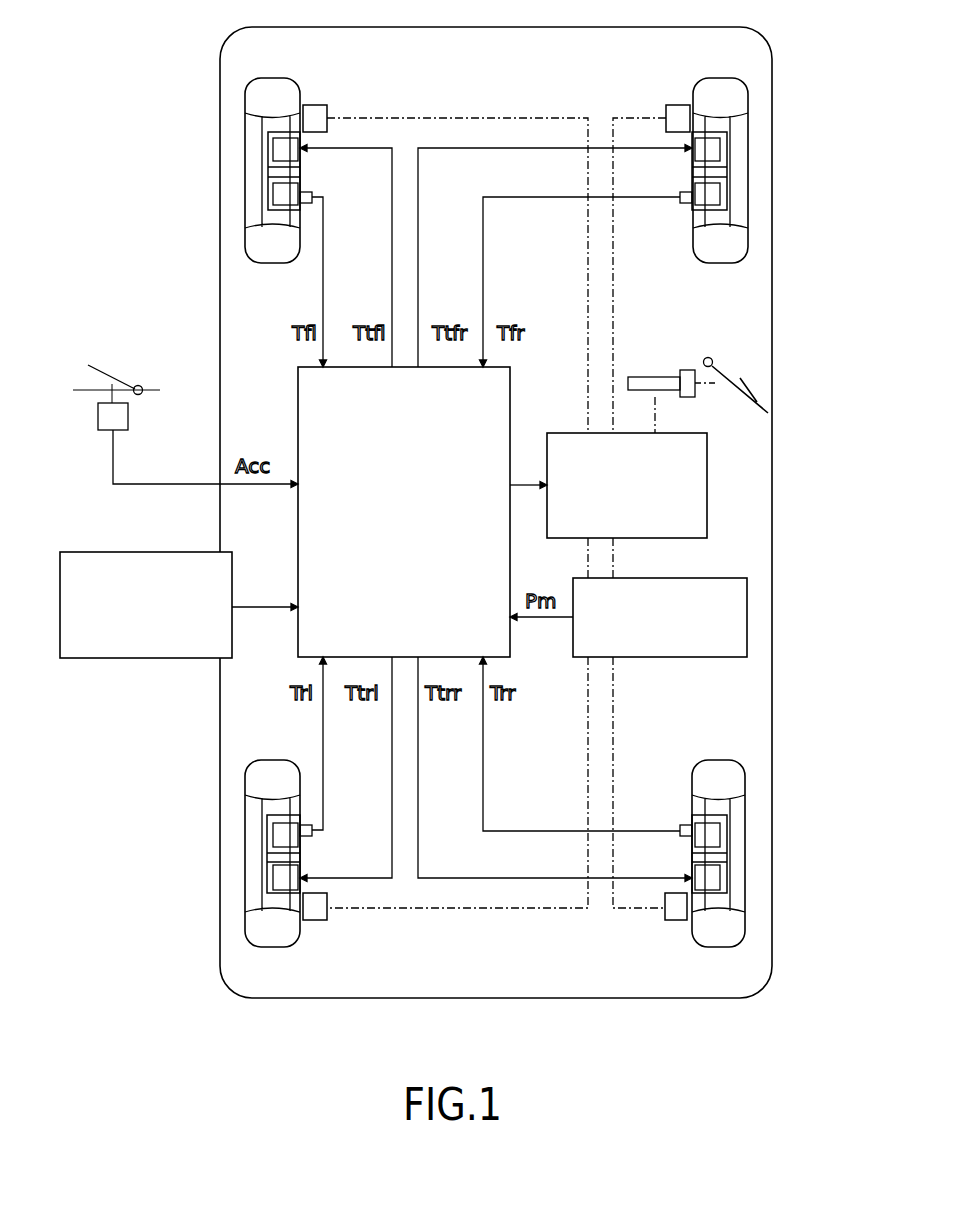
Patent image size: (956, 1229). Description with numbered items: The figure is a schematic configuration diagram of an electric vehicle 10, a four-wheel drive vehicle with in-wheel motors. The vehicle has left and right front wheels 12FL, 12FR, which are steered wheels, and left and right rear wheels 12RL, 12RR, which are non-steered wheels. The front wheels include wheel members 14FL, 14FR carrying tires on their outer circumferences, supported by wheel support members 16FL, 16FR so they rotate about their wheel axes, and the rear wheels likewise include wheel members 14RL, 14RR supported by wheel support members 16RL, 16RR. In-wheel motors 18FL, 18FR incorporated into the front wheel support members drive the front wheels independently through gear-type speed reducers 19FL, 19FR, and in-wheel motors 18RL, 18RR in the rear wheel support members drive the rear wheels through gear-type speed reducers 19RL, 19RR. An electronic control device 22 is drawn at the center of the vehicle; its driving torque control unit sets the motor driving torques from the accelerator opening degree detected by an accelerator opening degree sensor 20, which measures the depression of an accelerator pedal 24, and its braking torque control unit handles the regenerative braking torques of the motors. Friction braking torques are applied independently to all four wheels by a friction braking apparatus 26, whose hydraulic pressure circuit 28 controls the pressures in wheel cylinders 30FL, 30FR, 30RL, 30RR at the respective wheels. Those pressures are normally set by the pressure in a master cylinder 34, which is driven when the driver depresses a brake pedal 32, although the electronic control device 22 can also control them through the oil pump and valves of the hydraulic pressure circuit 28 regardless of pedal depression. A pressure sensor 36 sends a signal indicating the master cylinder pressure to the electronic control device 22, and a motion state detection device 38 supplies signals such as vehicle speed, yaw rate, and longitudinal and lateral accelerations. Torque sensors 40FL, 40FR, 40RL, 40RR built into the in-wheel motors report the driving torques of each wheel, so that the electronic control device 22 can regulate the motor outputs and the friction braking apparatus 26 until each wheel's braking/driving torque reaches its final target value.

The electric vehicle 10 is at (203, 33).
The left front wheel 12FL is at (247, 100).
The right front wheel 12FR is at (745, 100).
The left rear wheel 12RL is at (248, 920).
The right rear wheel 12RR is at (745, 920).
The wheel member 14FL is at (266, 135).
The wheel member 14FR is at (728, 136).
The wheel member 14RL is at (268, 888).
The wheel member 14RR is at (728, 888).
The wheel support member 16FL is at (262, 200).
The wheel support member 16FR is at (732, 200).
The wheel support member 16RL is at (262, 830).
The wheel support member 16RR is at (727, 830).
The in-wheel motor 18FL is at (285, 143).
The in-wheel motor 18FR is at (707, 147).
The in-wheel motor 18RL is at (286, 905).
The in-wheel motor 18RR is at (705, 905).
The gear-type speed reducer 19FL is at (272, 172).
The gear-type speed reducer 19FR is at (722, 172).
The gear-type speed reducer 19RL is at (272, 855).
The gear-type speed reducer 19RR is at (720, 855).
The wheel cylinder 30FL is at (320, 105).
The wheel cylinder 30FR is at (673, 105).
The wheel cylinder 30RL is at (320, 920).
The wheel cylinder 30RR is at (673, 922).
The torque sensor 40FL is at (305, 194).
The torque sensor 40FR is at (688, 204).
The torque sensor 40RL is at (312, 834).
The torque sensor 40RR is at (688, 826).
The accelerator opening degree sensor 20 is at (128, 418).
The electronic control device 22 is at (392, 563).
The accelerator pedal 24 is at (99, 362).
The friction braking apparatus 26 is at (700, 328).
The hydraulic pressure circuit 28 is at (615, 535).
The brake pedal 32 is at (750, 393).
The master cylinder 34 is at (659, 376).
The pressure sensor 36 is at (748, 613).
The motion state detection device 38 is at (60, 605).